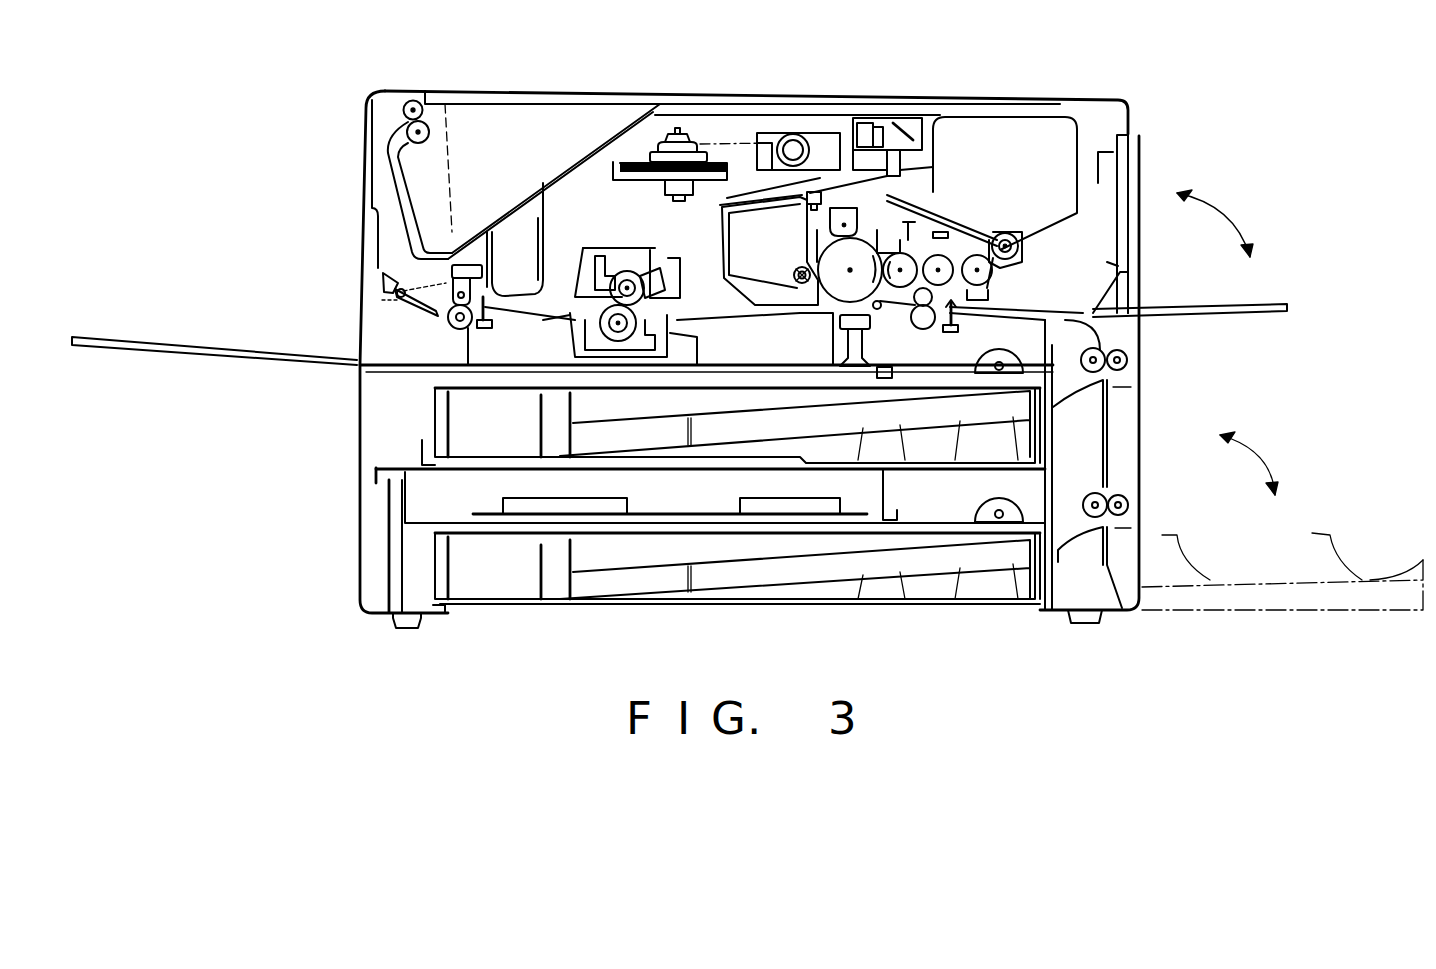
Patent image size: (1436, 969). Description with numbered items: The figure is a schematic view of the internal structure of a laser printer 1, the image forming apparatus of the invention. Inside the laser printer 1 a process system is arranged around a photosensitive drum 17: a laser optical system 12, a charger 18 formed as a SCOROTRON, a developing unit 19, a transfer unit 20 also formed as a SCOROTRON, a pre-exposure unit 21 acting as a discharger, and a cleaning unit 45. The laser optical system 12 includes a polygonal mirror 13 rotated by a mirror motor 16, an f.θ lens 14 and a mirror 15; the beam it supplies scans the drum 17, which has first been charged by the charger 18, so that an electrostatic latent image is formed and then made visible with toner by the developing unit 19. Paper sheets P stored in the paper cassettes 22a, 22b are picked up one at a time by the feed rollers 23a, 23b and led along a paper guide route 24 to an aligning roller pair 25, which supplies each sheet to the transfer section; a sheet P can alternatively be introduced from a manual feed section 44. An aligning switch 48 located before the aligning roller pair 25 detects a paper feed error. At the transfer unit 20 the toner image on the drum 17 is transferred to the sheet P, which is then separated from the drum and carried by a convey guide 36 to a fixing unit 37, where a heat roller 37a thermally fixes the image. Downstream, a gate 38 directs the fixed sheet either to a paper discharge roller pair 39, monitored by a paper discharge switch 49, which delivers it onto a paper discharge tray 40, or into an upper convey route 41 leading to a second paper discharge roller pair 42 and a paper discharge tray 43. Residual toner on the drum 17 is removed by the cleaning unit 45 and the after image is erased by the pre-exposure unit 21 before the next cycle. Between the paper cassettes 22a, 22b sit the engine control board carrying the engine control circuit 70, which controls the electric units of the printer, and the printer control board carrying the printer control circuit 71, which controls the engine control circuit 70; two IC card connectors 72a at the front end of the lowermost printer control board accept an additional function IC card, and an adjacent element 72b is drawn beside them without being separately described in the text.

The laser printer 1 is at (822, 78).
The laser optical system 12 is at (700, 125).
The polygonal mirror 13 is at (658, 140).
The f.θ lens 14 is at (880, 112).
The mirror 15 is at (880, 215).
The mirror motor 16 is at (690, 201).
The photosensitive drum 17 is at (868, 242).
The charger 18 is at (845, 206).
The developing unit 19 is at (1022, 252).
The transfer unit 20 is at (838, 325).
The pre-exposure unit 21 is at (828, 200).
The paper cassette 22a is at (515, 590).
The paper cassette 22b is at (455, 415).
The feed roller 23a is at (990, 508).
The feed roller 23b is at (1022, 349).
The paper guide route 24 is at (1107, 428).
The aligning roller pair 25 is at (917, 328).
The convey guide 36 is at (713, 375).
The fixing unit 37 is at (606, 247).
The heat roller 37a is at (629, 272).
The gate 38 is at (386, 279).
The paper discharge roller pair 39 is at (447, 320).
The paper discharge tray 40 is at (213, 362).
The upper convey route 41 is at (372, 210).
The paper discharge roller pair 42 is at (426, 96).
The paper discharge tray 43 is at (545, 180).
The manual feed section 44 is at (1133, 285).
The cleaning unit 45 is at (780, 222).
The aligning switch 48 is at (951, 332).
The paper discharge switch 49 is at (496, 326).
The engine control circuit 70 is at (480, 513).
The printer control circuit 71 is at (890, 495).
The IC card connectors 72a is at (615, 498).
The connector 72b is at (790, 496).
The paper sheet P is at (1112, 375).